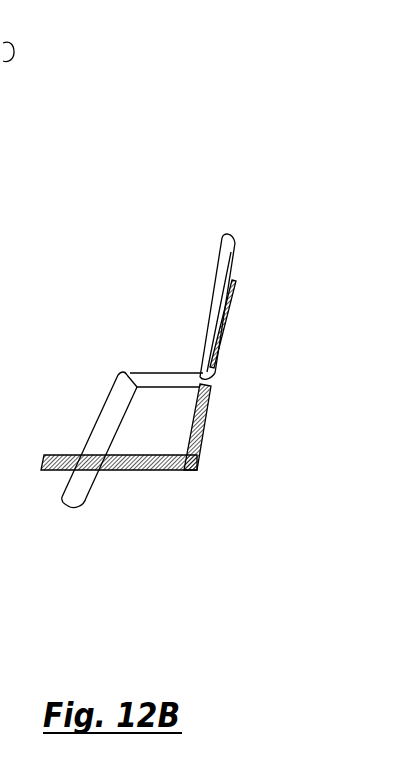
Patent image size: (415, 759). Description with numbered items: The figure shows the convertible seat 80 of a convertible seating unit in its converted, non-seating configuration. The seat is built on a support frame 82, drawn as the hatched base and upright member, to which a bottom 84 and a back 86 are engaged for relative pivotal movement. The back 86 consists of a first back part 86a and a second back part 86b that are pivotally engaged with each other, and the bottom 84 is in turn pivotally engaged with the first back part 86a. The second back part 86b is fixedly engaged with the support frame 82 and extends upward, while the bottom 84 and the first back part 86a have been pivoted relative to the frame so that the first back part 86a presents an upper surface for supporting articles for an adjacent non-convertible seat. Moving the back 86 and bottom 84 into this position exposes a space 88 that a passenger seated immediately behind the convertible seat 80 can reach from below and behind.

The convertible seat 80 is at (243, 185).
The support frame 82 is at (148, 472).
The bottom 84 is at (103, 432).
The back 86 is at (227, 337).
The first back part 86a is at (163, 372).
The second back part 86b is at (236, 249).
The space 88 is at (168, 428).